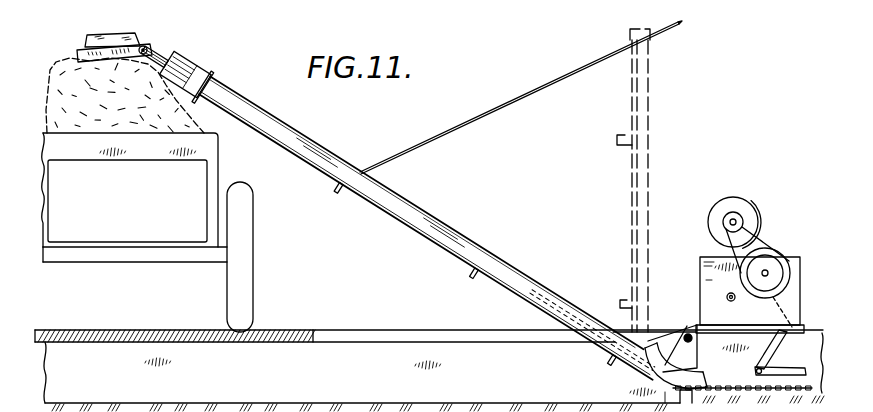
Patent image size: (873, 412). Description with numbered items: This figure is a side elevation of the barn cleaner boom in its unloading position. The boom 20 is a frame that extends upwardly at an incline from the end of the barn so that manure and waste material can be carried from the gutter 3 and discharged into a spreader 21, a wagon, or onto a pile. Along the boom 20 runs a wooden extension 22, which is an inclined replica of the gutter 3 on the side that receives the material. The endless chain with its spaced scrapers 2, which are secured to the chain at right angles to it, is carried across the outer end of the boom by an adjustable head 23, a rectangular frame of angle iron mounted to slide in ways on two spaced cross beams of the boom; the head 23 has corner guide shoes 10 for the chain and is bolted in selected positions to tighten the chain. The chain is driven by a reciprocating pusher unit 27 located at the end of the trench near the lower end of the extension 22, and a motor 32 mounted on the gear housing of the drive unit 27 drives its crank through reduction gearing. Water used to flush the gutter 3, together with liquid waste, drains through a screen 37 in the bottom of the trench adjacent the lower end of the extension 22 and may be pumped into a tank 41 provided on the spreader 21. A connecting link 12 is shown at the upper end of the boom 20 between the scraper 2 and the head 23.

The scraper 2 is at (108, 36).
The gutter 3 is at (805, 342).
The corner guide shoe 10 is at (650, 340).
The connecting link 12 is at (196, 33).
The boom 20 is at (470, 205).
The spreader 21 is at (208, 152).
The wooden extension 22 is at (521, 87).
The adjustable head 23 is at (204, 64).
The pusher unit 27 is at (699, 274).
The motor 32 is at (753, 204).
The screen 37 is at (822, 0).
The tank 41 is at (125, 229).